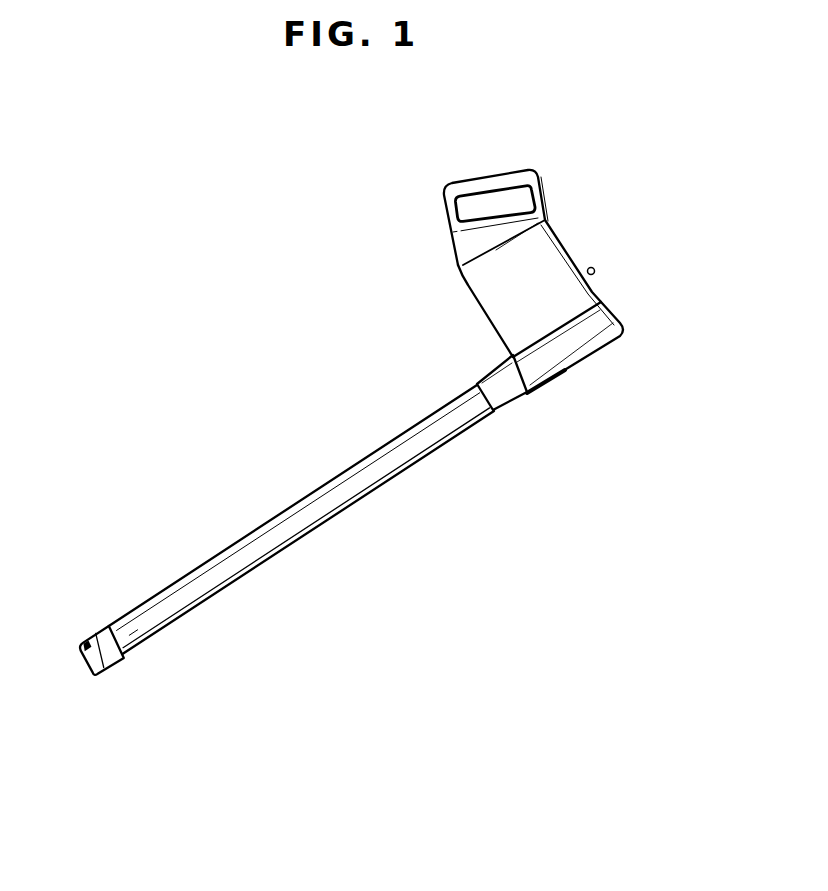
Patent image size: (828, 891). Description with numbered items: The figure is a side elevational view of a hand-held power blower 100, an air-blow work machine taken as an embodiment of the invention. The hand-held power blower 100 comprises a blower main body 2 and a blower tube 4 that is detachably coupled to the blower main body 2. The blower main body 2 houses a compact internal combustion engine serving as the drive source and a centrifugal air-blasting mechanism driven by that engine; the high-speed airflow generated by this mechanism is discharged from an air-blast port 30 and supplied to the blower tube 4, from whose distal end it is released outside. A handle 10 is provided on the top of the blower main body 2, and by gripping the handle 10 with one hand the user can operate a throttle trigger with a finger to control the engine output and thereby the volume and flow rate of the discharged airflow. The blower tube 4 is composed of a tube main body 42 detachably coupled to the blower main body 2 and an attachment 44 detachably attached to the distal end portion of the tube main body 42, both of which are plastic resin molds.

The hand-held power blower 100 is at (236, 260).
The blower main body 2 is at (607, 234).
The blower tube 4 is at (255, 497).
The handle 10 is at (490, 182).
The air-blast port 30 is at (507, 400).
The tube main body 42 is at (347, 507).
The attachment 44 is at (105, 660).